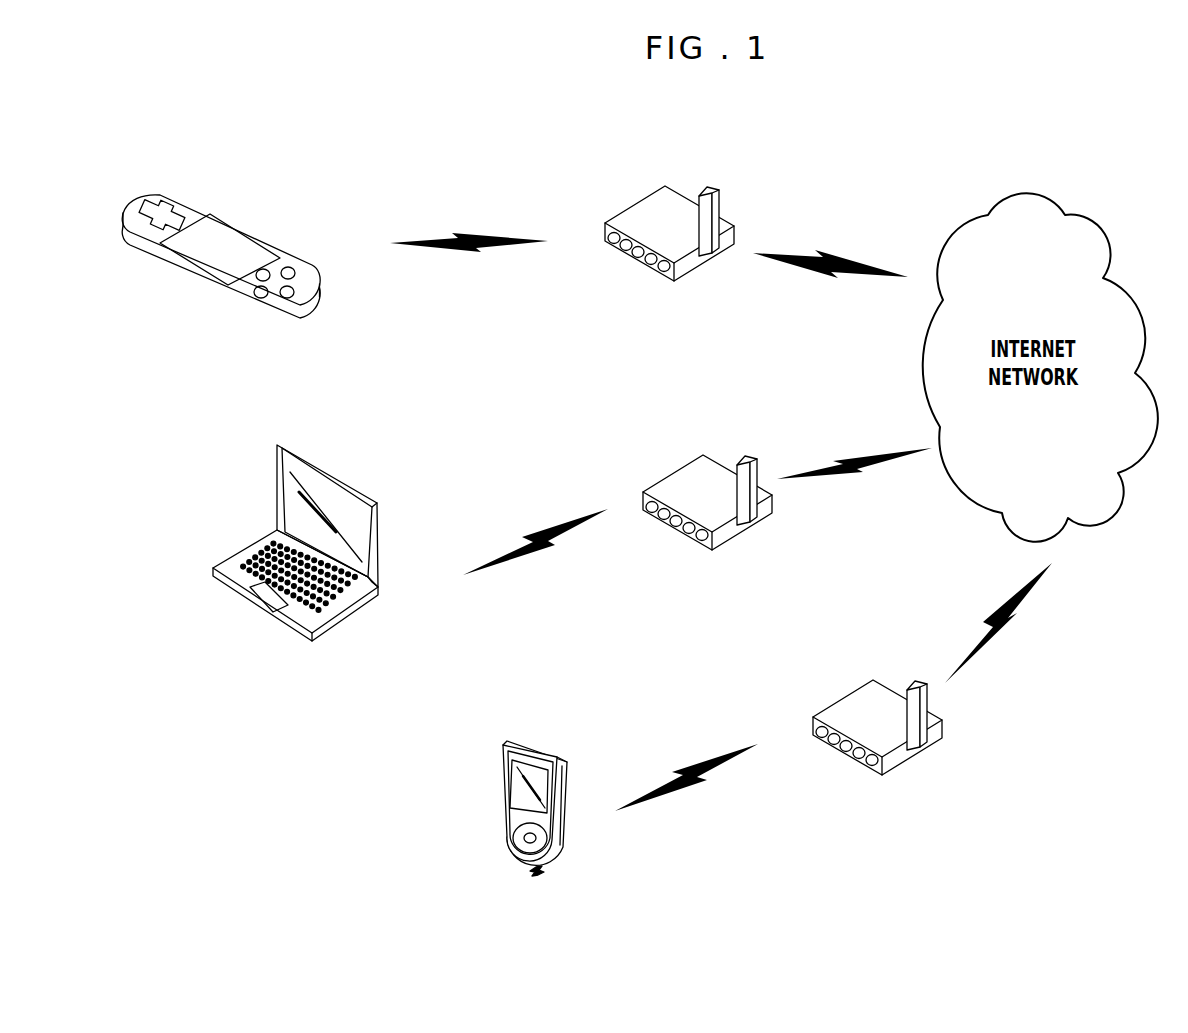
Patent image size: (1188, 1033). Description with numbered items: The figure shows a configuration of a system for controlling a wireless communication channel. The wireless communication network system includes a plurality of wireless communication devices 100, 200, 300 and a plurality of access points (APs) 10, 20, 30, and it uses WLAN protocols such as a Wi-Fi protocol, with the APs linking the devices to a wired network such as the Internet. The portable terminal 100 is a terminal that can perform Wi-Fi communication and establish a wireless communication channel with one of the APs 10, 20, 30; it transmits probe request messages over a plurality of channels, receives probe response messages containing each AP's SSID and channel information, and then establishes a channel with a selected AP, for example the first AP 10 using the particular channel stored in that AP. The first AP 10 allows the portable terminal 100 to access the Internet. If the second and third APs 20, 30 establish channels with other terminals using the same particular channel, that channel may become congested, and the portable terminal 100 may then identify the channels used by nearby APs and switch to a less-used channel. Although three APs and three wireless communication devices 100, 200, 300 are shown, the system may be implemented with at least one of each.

The first AP 10 is at (942, 740).
The second AP 20 is at (772, 515).
The third AP 30 is at (732, 230).
The portable terminal 100 is at (553, 750).
The wireless communication device 200 is at (375, 501).
The wireless communication device 300 is at (187, 197).